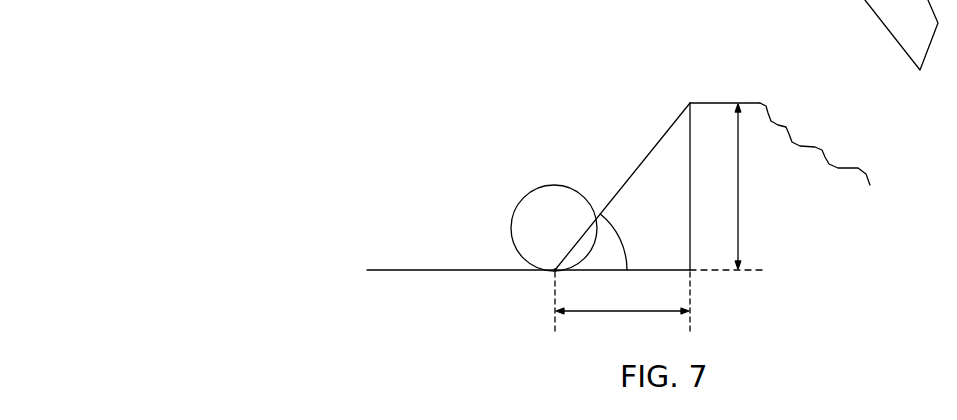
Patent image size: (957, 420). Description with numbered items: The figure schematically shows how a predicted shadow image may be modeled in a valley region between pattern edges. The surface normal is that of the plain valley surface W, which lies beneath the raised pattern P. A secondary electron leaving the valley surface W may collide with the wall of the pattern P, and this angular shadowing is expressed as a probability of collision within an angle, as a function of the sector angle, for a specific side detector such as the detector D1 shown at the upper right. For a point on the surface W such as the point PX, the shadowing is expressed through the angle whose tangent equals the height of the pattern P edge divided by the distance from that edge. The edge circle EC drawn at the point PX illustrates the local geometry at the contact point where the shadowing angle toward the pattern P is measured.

The valley surface W is at (428, 260).
The pattern P is at (720, 91).
The edge circle of tool EC is at (515, 194).
The contact point PX is at (545, 276).
The detector D1 is at (901, 35).